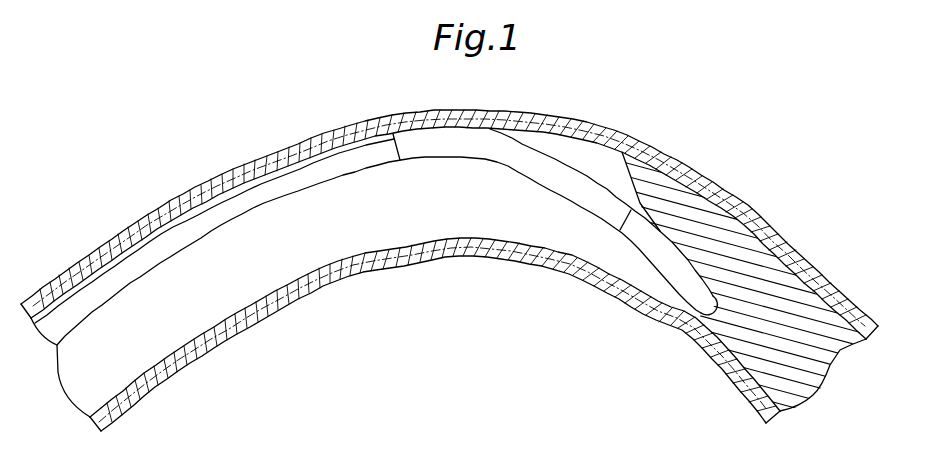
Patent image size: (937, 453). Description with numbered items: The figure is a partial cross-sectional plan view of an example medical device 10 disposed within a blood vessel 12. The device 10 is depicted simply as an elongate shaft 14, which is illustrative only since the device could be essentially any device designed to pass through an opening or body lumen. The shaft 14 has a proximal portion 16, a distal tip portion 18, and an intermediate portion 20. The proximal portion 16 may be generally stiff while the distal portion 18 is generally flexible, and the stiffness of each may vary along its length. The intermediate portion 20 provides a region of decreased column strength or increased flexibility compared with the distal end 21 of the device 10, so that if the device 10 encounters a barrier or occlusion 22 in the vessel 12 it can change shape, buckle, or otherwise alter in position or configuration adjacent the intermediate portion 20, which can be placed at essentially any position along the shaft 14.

The medical device 10 is at (182, 270).
The blood vessel 12 is at (270, 142).
The elongate shaft 14 is at (325, 133).
The proximal portion 16 is at (110, 283).
The distal tip portion 18 is at (668, 258).
The intermediate portion 20 is at (556, 170).
The distal end 21 is at (668, 308).
The barrier or occlusion 22 is at (764, 270).